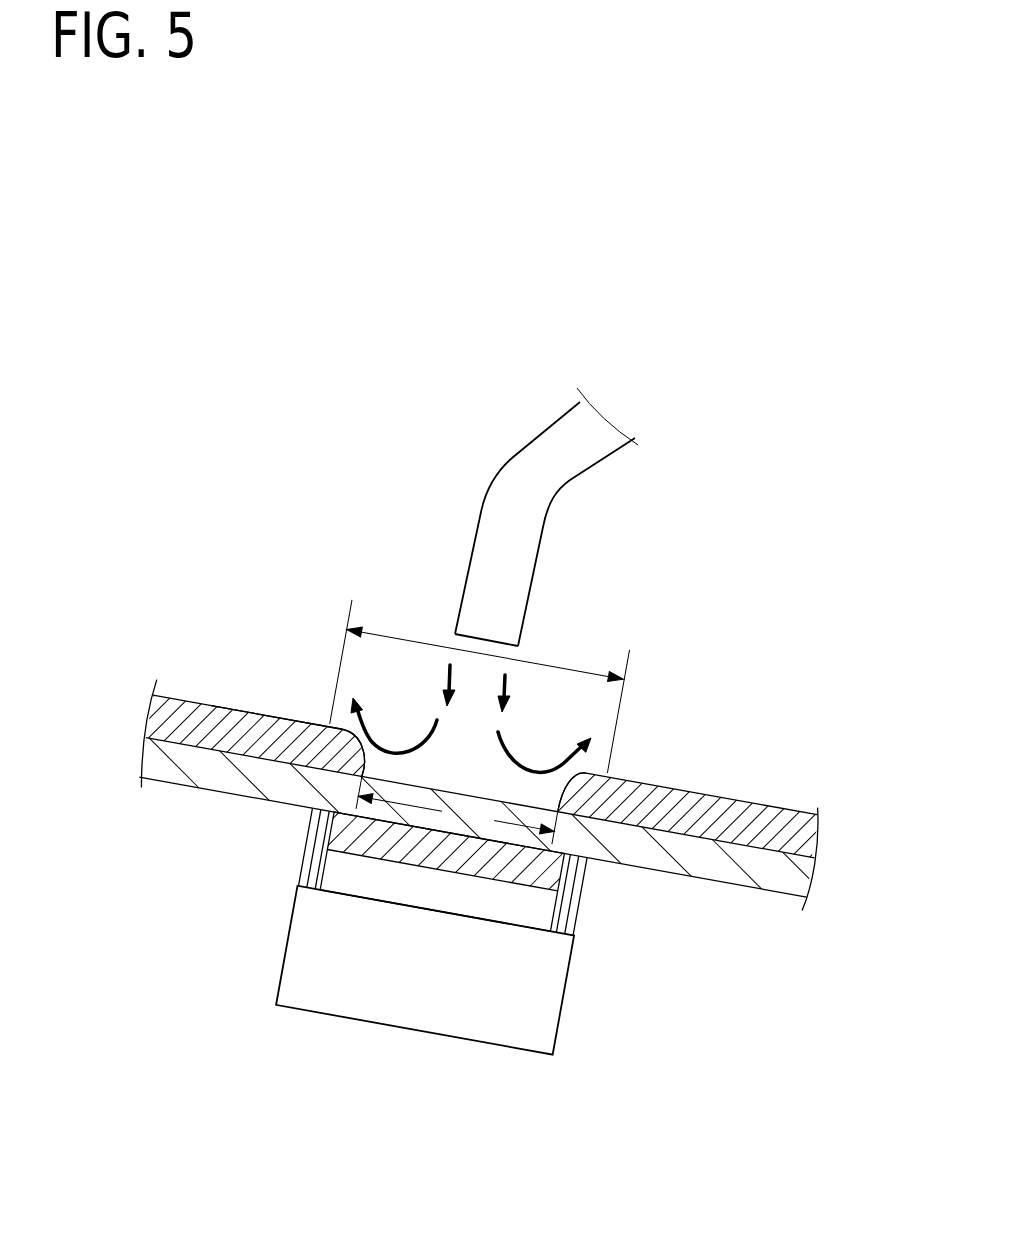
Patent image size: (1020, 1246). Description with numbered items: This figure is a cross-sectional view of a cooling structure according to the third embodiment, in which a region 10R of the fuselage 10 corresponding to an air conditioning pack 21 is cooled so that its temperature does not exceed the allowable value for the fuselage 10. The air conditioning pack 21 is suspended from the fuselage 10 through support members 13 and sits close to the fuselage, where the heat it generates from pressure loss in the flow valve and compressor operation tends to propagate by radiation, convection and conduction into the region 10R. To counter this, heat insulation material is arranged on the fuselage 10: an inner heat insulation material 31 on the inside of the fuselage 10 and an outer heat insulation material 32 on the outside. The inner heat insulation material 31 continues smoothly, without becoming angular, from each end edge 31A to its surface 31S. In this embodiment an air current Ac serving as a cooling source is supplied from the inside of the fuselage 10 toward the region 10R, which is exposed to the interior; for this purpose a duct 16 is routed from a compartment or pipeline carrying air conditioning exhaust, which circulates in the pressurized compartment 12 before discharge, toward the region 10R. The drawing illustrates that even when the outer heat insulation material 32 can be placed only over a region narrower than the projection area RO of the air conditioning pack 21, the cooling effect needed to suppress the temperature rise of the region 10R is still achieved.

The fuselage 10 is at (250, 793).
The region of the fuselage 10R is at (457, 808).
The pressurized compartment 12 is at (334, 500).
The support member 13 is at (302, 858).
The duct 16 is at (507, 463).
The air conditioning pack 21 is at (281, 972).
The inner heat insulation material 31 is at (753, 802).
The end edge 31A is at (341, 724).
The surface of the inner heat insulation material 31S is at (262, 715).
The outer heat insulation material 32 is at (467, 862).
The projection area RO is at (480, 687).
The air current Ac is at (471, 718).